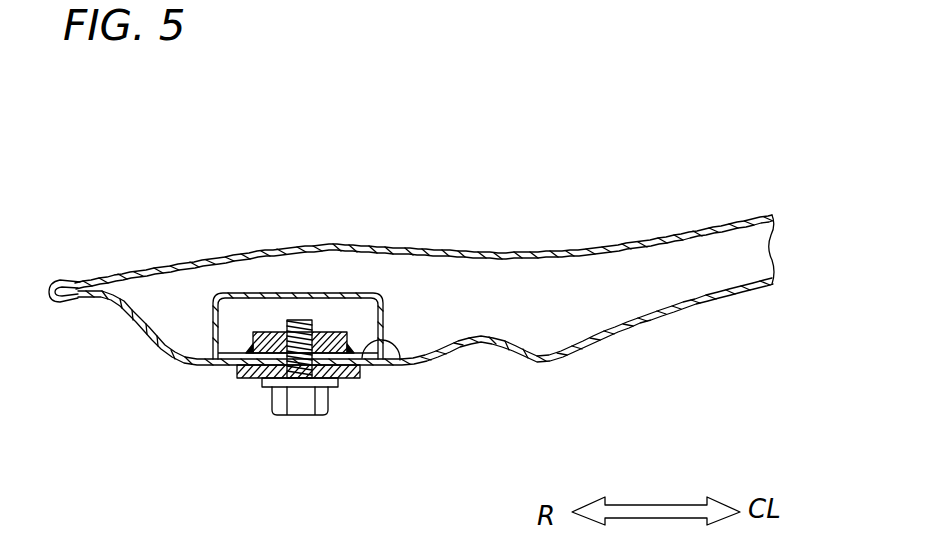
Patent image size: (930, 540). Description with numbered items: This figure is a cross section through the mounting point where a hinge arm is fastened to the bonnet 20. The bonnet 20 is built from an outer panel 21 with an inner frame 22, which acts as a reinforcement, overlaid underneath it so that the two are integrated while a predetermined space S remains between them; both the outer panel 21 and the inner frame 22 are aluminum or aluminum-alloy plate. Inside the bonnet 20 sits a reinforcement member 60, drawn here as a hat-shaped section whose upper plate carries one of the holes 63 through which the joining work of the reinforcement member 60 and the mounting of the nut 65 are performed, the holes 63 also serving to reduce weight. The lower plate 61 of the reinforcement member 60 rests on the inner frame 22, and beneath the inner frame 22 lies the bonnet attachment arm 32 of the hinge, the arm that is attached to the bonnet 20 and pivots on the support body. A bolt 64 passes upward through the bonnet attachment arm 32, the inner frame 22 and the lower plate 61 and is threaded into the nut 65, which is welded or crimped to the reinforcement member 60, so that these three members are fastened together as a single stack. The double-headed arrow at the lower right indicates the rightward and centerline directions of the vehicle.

The bonnet 20 is at (411, 234).
The outer panel 21 is at (520, 250).
The inner frame 22 is at (612, 328).
The bonnet attachment arm 32 is at (238, 378).
The reinforcement member 60 is at (283, 314).
The lower plate 61 is at (400, 362).
The holes 63 is at (350, 294).
The bolt 64 is at (303, 403).
The nut 65 is at (273, 333).
The space S is at (522, 320).